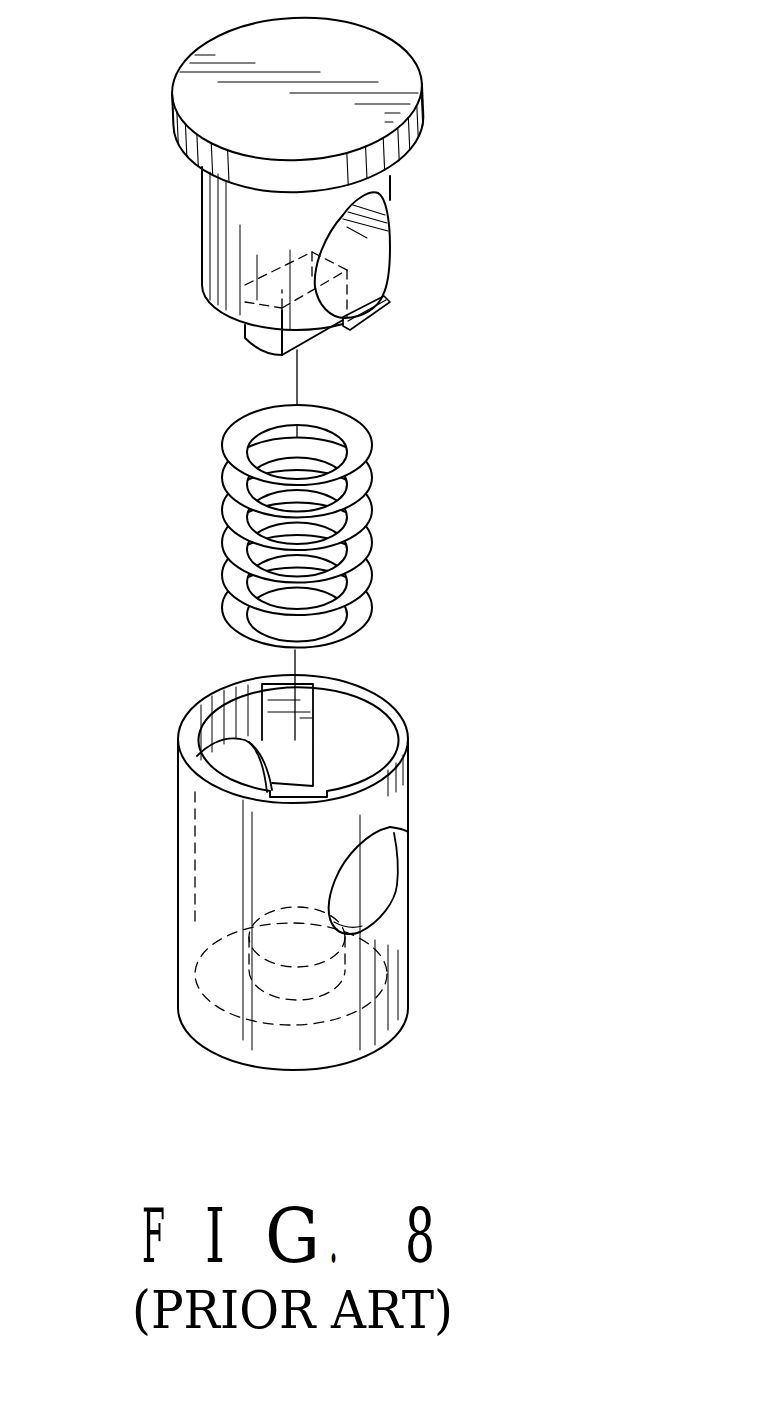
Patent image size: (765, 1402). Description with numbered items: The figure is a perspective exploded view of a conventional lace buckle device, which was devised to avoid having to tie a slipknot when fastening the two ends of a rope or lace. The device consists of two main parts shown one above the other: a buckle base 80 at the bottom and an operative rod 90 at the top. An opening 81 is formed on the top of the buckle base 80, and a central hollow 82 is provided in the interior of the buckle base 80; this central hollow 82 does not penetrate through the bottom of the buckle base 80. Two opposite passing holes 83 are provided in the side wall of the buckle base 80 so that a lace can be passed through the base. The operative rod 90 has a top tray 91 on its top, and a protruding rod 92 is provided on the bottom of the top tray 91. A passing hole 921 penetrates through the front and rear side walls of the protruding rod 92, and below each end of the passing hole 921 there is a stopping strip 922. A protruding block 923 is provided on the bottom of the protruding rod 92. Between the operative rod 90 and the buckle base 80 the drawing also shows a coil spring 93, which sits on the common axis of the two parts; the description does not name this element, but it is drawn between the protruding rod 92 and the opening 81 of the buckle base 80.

The buckle base 80 is at (485, 805).
The opening 81 is at (355, 692).
The central hollow 82 is at (373, 770).
The passing holes 83 is at (377, 890).
The operative rod 90 is at (482, 190).
The top tray 91 is at (411, 128).
The protruding rod 92 is at (218, 233).
The passing hole 921 is at (377, 220).
The stopping strip 922 is at (377, 317).
The protruding block 923 is at (257, 335).
The spring 93 is at (360, 515).